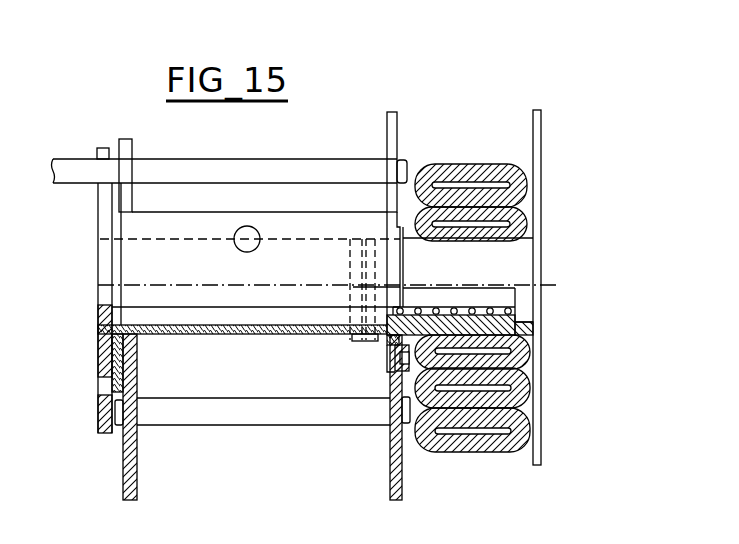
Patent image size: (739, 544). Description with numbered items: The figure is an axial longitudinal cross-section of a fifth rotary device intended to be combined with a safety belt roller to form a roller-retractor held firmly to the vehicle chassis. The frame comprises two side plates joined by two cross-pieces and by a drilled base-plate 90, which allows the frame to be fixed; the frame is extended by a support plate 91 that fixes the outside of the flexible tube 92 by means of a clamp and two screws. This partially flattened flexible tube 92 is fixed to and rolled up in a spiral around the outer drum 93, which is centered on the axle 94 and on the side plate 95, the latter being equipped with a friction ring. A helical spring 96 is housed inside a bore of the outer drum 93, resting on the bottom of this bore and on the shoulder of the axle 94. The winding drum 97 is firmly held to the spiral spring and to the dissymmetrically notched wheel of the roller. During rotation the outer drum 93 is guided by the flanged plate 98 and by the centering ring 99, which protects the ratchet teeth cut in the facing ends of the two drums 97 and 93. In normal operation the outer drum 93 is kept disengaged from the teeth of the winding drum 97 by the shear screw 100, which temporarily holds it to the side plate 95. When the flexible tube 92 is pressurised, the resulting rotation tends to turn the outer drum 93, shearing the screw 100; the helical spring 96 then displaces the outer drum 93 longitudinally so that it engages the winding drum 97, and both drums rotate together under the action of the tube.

The drilled base-plate 90 is at (140, 258).
The support plate 91 is at (527, 380).
The flexible tube 92 is at (518, 164).
The outer drum 93 is at (508, 262).
The axle 94 is at (207, 295).
The side plate 95 is at (398, 472).
The helical spring 96 is at (490, 303).
The winding drum 97 is at (236, 334).
The flanged plate 98 is at (110, 360).
The centering ring 99 is at (365, 337).
The shear screw 100 is at (385, 345).